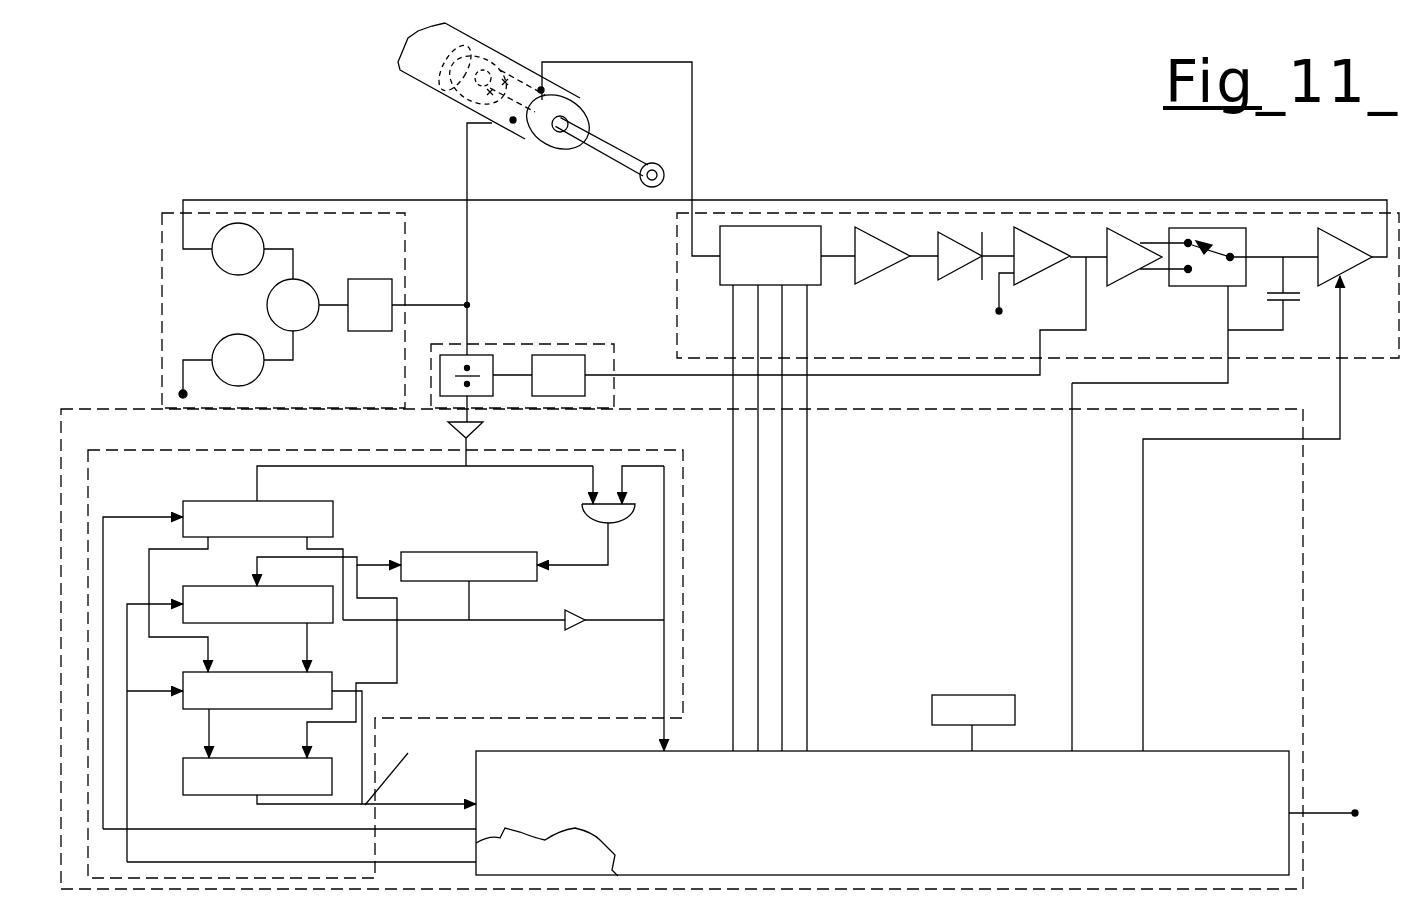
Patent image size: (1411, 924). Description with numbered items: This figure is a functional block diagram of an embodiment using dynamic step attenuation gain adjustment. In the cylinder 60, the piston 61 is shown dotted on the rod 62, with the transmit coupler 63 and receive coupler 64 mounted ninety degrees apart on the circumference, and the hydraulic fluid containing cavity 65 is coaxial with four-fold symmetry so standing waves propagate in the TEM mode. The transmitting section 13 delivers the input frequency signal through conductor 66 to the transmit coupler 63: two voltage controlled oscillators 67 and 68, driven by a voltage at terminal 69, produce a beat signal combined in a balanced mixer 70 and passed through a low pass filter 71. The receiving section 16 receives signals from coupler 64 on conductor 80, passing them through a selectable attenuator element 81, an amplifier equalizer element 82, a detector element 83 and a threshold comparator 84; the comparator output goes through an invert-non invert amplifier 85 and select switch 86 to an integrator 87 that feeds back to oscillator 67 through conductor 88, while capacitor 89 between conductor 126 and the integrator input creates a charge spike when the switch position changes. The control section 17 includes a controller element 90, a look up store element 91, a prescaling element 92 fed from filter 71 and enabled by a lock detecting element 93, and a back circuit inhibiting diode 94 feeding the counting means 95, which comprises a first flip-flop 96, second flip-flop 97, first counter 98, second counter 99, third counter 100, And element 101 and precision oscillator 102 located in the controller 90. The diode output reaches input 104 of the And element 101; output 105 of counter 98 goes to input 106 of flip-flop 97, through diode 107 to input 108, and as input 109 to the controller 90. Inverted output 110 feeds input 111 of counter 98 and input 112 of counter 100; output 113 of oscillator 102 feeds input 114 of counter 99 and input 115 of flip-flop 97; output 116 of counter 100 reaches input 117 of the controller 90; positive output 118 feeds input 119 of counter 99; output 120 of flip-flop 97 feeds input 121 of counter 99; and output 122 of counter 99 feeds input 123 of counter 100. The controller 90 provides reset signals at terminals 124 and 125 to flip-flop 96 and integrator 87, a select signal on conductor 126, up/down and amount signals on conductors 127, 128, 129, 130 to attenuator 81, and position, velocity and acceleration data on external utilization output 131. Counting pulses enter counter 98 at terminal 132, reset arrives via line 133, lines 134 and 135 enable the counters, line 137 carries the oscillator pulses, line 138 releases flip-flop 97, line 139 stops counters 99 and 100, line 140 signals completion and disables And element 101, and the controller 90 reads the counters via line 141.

The transmitting section 13 is at (162, 255).
The receiving section 16 is at (677, 265).
The control section 17 is at (1303, 632).
The cylinder 60 is at (400, 48).
The piston 61 is at (445, 88).
The rod 62 is at (607, 143).
The transmit coupler 63 is at (513, 120).
The receive coupler 64 is at (553, 93).
The hydraulic fluid containing cavity 65 is at (541, 90).
The conductor 66 is at (467, 185).
The voltage controlled oscillator 67 is at (264, 249).
The voltage controlled oscillator 68 is at (232, 340).
The terminal 69 is at (183, 394).
The balanced mixer 70 is at (267, 305).
The low pass filter 71 is at (375, 331).
The conductor 80 is at (692, 130).
The selectable attenuator element 81 is at (725, 285).
The amplifier equalizer element 82 is at (893, 275).
The detector element 83 is at (963, 273).
The threshold comparator 84 is at (1060, 272).
The invert-non invert amplifier 85 is at (1138, 280).
The select switch 86 is at (1208, 286).
The integrator 87 is at (1350, 275).
The conductor 88 is at (930, 200).
The capacitor 89 is at (1199, 320).
The controller element 90 is at (1289, 785).
The look up store element 91 is at (965, 695).
The prescaling element 92 is at (488, 396).
The lock detecting element 93 is at (570, 396).
The back circuit inhibiting diode 94 is at (455, 432).
The counting means 95 is at (683, 608).
The first flip-flop 96 is at (246, 530).
The second flip-flop 97 is at (246, 615).
The first counter 98 is at (465, 552).
The second counter 99 is at (246, 701).
The third counter 100 is at (241, 788).
The And element 101 is at (600, 512).
The precision oscillator 102 is at (545, 840).
The input 104 is at (590, 500).
The output 105 is at (262, 501).
The input 106 is at (262, 585).
The back circuit inhibiting diode 107 is at (575, 630).
The input 108 is at (632, 506).
The input 109 is at (660, 748).
The inverted output 110 is at (307, 540).
The input 111 is at (395, 575).
The input 112 is at (310, 752).
The output 113 is at (476, 862).
The input 114 is at (183, 695).
The input 115 is at (150, 635).
The output 116 is at (257, 800).
The input 117 is at (473, 827).
The positive output 118 is at (208, 538).
The input 119 is at (210, 665).
The output 120 is at (308, 625).
The input 121 is at (310, 668).
The output 122 is at (212, 712).
The input 123 is at (207, 760).
The terminal 124 is at (460, 804).
The terminal 125 is at (1143, 745).
The conductor 126 is at (1072, 745).
The conductor 127 is at (732, 760).
The conductor 128 is at (757, 770).
The conductor 129 is at (782, 770).
The conductor 130 is at (808, 760).
The external utilization output 131 is at (1331, 829).
The terminal 132 is at (545, 565).
The line 133 is at (128, 515).
The line 134 is at (149, 580).
The line 135 is at (397, 685).
The line 137 is at (242, 862).
The line 138 is at (405, 620).
The line 139 is at (305, 640).
The line 140 is at (640, 620).
The line 141 is at (394, 768).